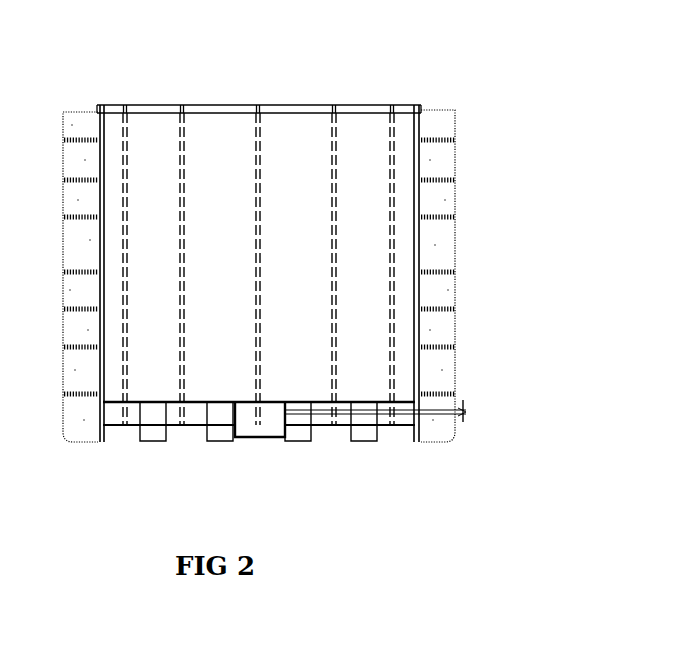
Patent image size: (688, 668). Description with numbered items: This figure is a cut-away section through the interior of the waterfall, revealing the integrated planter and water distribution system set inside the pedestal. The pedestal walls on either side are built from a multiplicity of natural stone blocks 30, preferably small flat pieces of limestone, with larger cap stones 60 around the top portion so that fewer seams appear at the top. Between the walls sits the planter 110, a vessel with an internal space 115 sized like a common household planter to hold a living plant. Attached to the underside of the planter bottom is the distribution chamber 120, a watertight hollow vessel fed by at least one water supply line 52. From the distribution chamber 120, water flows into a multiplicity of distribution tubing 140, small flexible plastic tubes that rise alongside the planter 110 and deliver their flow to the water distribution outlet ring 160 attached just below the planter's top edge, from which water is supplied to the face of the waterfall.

The natural stone blocks 30 is at (436, 200).
The cap stones 60 is at (436, 126).
The planter 110 is at (305, 257).
The internal space 115 is at (378, 113).
The water distribution outlet ring 160 is at (228, 108).
The distribution tubing 140 is at (338, 328).
The distribution chamber 120 is at (268, 410).
The water supply line 52 is at (463, 405).